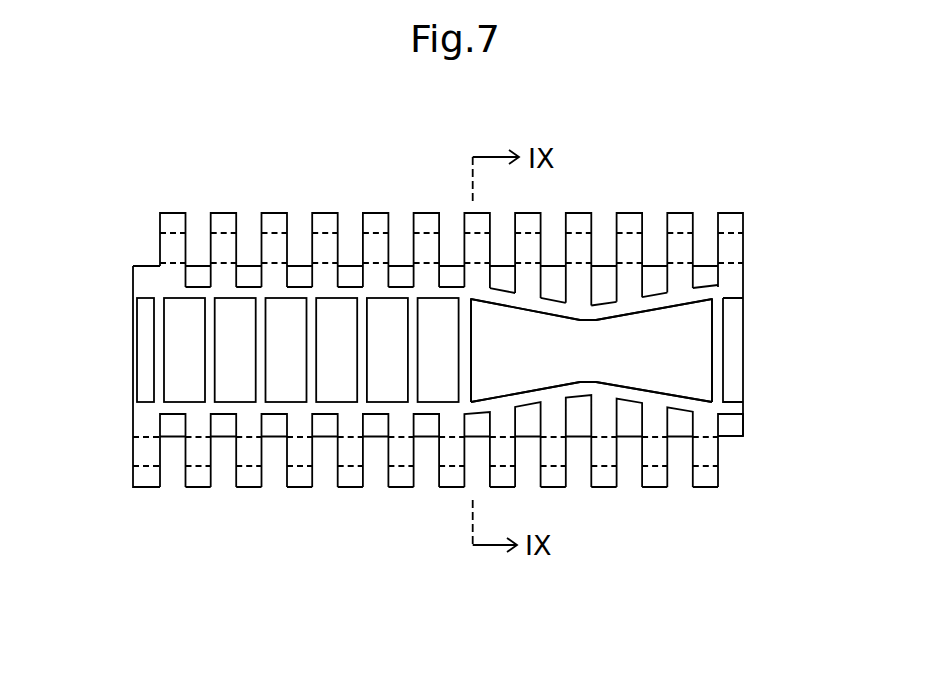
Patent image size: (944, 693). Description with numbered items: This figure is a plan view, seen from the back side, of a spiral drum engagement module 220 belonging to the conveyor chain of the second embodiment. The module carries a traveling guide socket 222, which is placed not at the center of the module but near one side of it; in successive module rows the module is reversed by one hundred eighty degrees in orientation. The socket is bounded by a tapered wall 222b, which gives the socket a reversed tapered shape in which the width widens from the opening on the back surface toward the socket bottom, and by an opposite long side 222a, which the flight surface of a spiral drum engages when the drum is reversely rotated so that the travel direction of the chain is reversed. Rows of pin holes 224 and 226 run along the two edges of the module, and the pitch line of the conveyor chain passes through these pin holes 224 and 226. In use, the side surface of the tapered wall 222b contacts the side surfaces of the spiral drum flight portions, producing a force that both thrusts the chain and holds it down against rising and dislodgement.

The spiral drum engagement module 220 is at (453, 572).
The traveling guide socket 222 is at (683, 377).
The opposite long side 222a is at (713, 358).
The tapered wall 222b is at (661, 310).
The pin hole 224 is at (703, 467).
The pin hole 226 is at (170, 236).